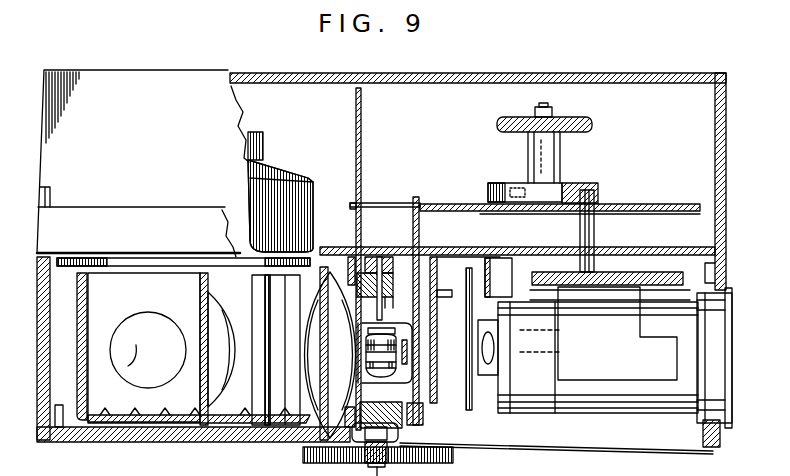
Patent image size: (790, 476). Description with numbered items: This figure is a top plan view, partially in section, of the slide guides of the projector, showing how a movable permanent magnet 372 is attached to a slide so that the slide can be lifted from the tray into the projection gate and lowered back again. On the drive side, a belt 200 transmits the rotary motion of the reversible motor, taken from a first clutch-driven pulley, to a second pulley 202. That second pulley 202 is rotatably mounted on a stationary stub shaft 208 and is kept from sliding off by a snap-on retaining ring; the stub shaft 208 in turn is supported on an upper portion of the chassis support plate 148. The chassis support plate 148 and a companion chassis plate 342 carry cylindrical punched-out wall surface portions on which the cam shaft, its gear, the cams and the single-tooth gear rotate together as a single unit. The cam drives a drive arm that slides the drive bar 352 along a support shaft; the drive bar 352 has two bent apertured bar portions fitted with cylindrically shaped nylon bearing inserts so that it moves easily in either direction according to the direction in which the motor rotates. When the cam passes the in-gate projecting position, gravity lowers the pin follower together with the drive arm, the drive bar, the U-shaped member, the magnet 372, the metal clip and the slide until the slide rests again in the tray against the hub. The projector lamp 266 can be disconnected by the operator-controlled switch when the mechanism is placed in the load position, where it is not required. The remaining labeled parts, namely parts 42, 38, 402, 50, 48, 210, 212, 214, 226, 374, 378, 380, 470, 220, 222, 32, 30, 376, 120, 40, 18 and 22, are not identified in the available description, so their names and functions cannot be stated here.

The lid / upper housing cover 42 is at (45, 92).
The top wall of housing 38 is at (291, 82).
The vertical partition plate 402 is at (357, 135).
The shelf 50 is at (143, 222).
The drive bar 352 is at (418, 200).
The chassis support plate 148 is at (450, 204).
The second pulley 202 is at (510, 118).
The stationary stub shaft 208 is at (545, 104).
The belt 200 is at (592, 127).
The right wall of housing 48 is at (726, 118).
The bearing block 210 is at (508, 183).
The bearing block 212 is at (576, 184).
The vertical support bar 214 is at (594, 230).
The mounting plate 226 is at (548, 272).
The lamp support plate 374 is at (380, 250).
The vertical plate 378 is at (412, 308).
The chassis plate 342 is at (495, 247).
The magnet 372 is at (365, 330).
The projector lamp 266 is at (145, 328).
The lamp socket bracket 380 is at (415, 350).
The vertical rod 470 is at (472, 400).
The motor / lens barrel 220 is at (550, 381).
The inner housing 222 is at (625, 370).
The lens nozzle 32 is at (729, 325).
The foot / base support 30 is at (716, 433).
The lamp socket base 376 is at (403, 432).
The ribbed strip 120 is at (303, 450).
The left wall of lower housing 40 is at (42, 412).
The bottom wall of housing 18 is at (190, 436).
The terminal connector 22 is at (391, 459).